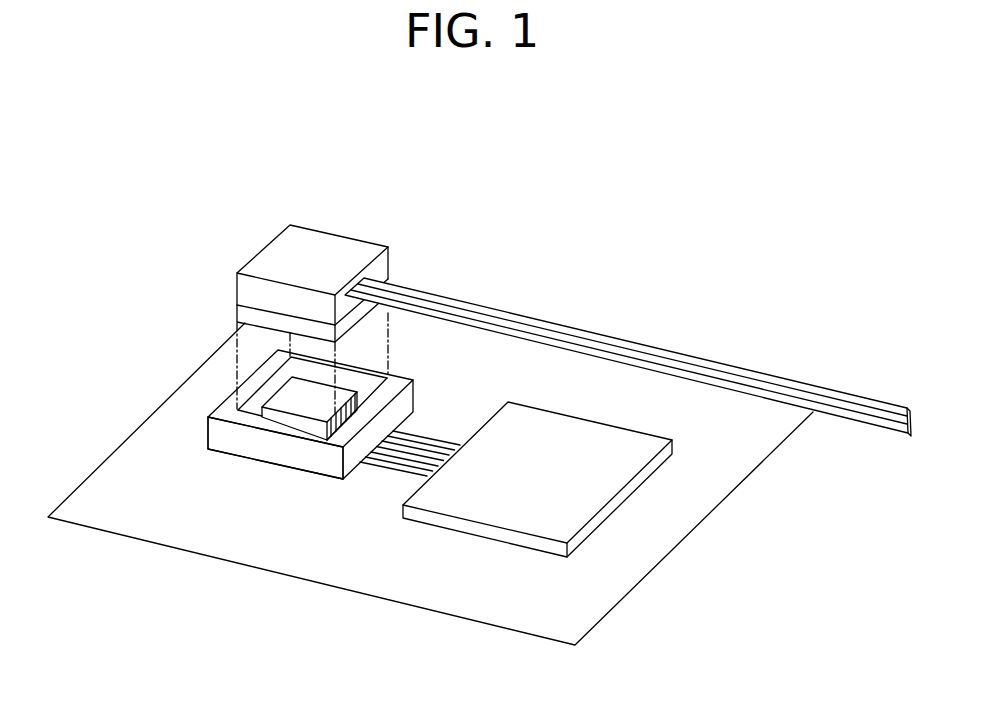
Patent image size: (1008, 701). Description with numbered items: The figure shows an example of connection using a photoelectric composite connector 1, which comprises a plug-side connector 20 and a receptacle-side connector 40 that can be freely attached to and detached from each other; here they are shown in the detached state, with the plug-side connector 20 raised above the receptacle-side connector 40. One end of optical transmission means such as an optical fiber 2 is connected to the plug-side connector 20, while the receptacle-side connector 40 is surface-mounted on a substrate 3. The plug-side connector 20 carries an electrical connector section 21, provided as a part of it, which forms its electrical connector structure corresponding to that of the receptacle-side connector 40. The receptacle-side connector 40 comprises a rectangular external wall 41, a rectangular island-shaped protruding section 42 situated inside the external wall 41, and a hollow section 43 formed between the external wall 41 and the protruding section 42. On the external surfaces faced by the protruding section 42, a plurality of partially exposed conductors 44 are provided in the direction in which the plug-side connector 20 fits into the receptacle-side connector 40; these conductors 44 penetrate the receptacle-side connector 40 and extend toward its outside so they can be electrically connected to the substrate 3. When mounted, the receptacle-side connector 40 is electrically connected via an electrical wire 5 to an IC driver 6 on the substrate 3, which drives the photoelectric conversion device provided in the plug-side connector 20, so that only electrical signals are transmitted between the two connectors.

The photoelectric composite connector 1 is at (419, 162).
The optical fiber 2 is at (842, 420).
The substrate 3 is at (667, 531).
The electrical wire 5 is at (393, 460).
The IC driver 6 is at (493, 508).
The plug-side connector 20 is at (337, 242).
The electrical connector section 21 is at (240, 305).
The receptacle-side connector 40 is at (278, 457).
The external wall 41 is at (220, 445).
The protruding section 42 is at (290, 407).
The hollow section 43 is at (290, 373).
The conductors 44 is at (326, 442).